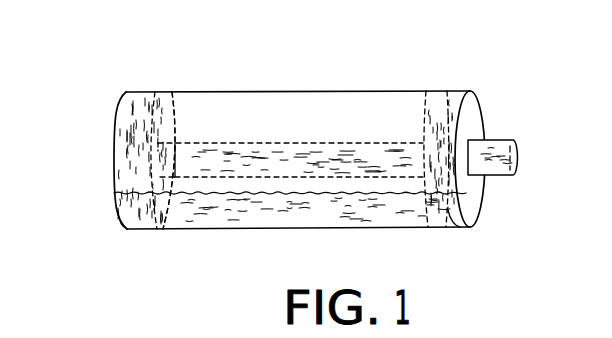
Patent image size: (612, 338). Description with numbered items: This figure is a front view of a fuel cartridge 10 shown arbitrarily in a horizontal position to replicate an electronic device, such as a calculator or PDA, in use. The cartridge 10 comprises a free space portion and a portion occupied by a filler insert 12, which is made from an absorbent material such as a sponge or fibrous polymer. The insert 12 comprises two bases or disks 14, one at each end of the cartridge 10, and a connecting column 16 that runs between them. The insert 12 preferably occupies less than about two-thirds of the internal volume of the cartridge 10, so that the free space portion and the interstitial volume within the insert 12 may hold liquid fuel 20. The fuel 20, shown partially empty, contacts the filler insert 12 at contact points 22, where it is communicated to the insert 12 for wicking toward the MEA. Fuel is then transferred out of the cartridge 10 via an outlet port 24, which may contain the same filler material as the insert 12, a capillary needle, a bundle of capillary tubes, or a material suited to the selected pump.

The fuel cartridge 10 is at (367, 56).
The filler insert 12 is at (173, 115).
The bases or disks 14 is at (451, 98).
The connecting column 16 is at (262, 155).
The liquid fuel 20 is at (205, 212).
The contact points 22 is at (128, 227).
The outlet port 24 is at (497, 141).